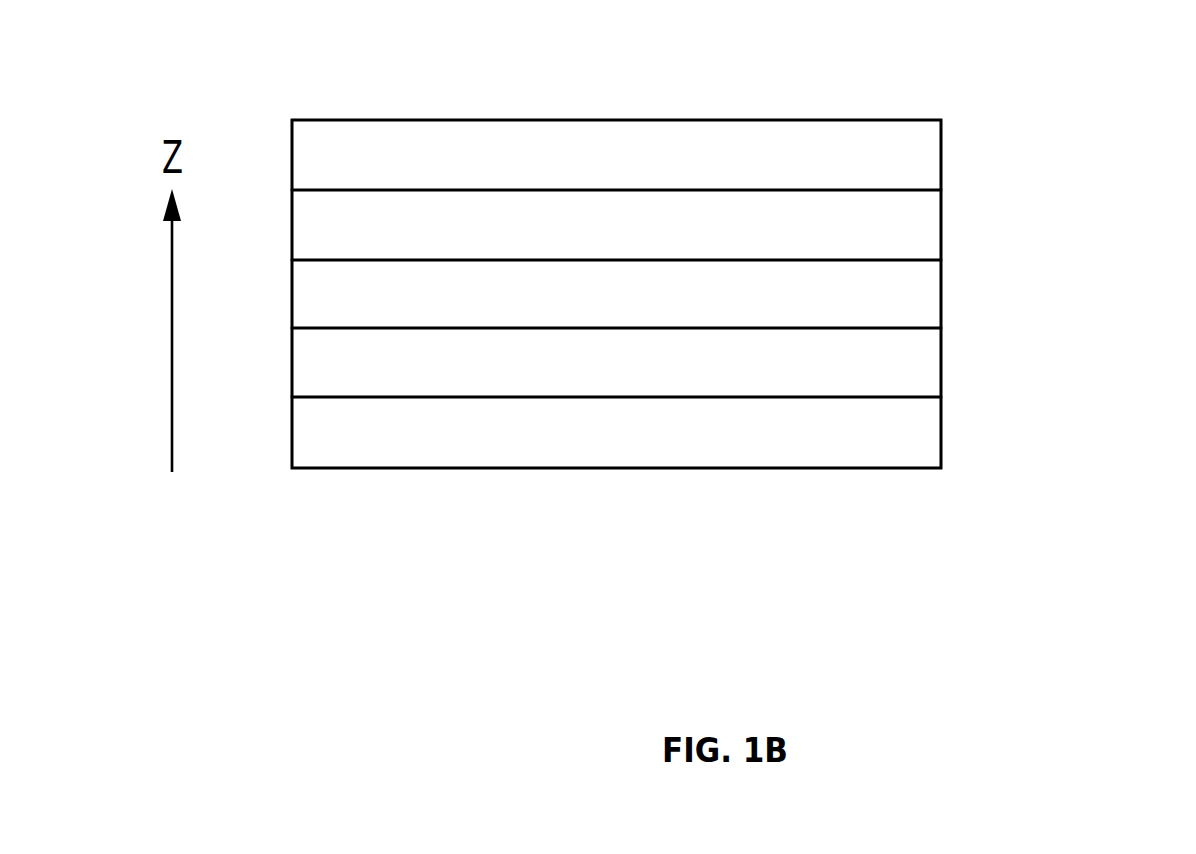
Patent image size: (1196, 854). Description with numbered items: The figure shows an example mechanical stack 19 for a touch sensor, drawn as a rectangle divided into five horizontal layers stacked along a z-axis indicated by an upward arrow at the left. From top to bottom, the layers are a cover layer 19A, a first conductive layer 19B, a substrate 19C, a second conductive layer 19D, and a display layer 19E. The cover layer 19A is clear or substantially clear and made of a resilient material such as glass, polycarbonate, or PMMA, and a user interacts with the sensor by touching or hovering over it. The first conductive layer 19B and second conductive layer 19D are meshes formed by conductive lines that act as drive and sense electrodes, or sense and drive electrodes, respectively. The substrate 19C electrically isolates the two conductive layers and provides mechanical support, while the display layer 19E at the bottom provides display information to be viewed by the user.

The mechanical stack 19 is at (984, 94).
The cover layer 19A is at (941, 152).
The first conductive layer 19B is at (941, 222).
The substrate 19C is at (941, 293).
The second conductive layer 19D is at (941, 360).
The display layer 19E is at (941, 432).